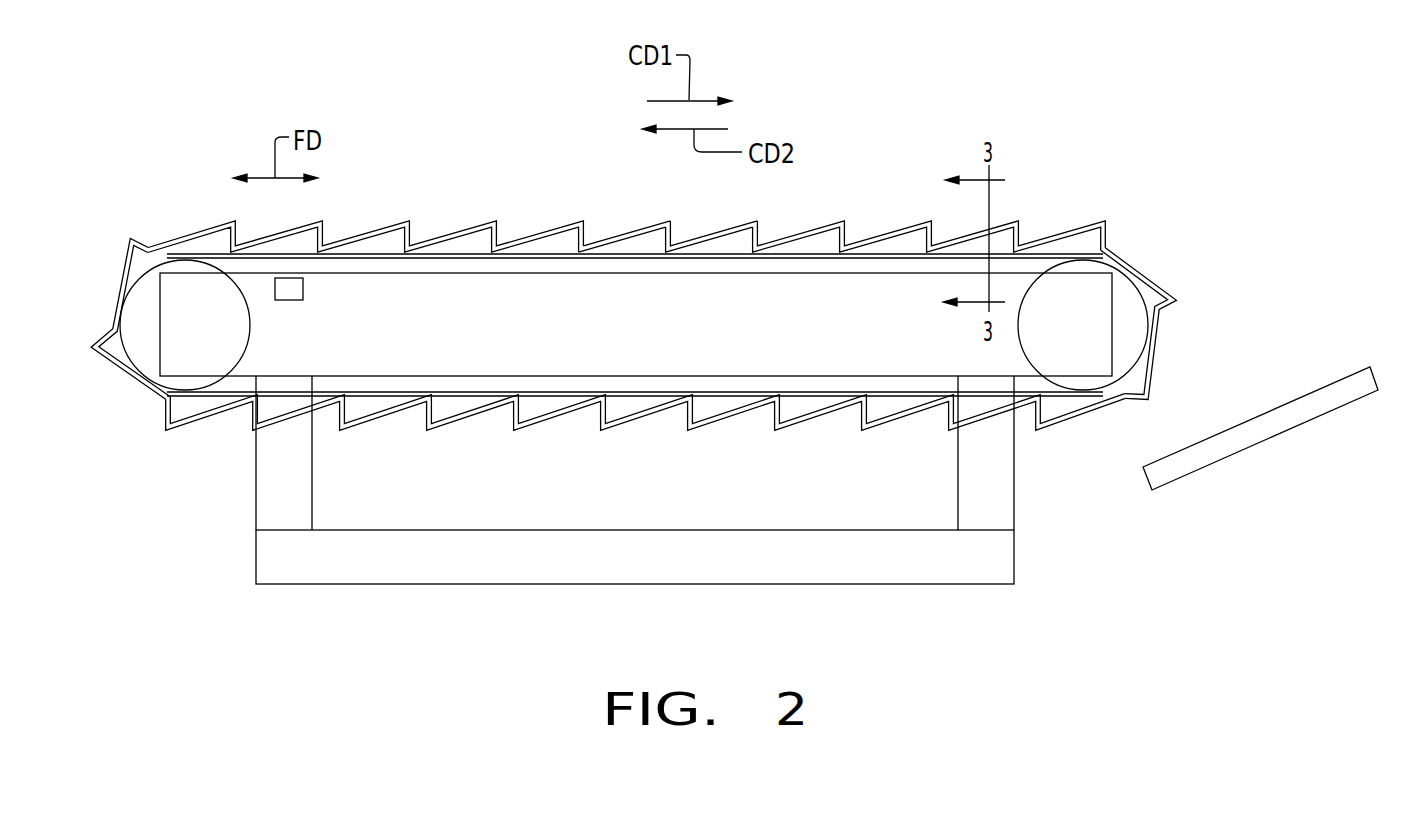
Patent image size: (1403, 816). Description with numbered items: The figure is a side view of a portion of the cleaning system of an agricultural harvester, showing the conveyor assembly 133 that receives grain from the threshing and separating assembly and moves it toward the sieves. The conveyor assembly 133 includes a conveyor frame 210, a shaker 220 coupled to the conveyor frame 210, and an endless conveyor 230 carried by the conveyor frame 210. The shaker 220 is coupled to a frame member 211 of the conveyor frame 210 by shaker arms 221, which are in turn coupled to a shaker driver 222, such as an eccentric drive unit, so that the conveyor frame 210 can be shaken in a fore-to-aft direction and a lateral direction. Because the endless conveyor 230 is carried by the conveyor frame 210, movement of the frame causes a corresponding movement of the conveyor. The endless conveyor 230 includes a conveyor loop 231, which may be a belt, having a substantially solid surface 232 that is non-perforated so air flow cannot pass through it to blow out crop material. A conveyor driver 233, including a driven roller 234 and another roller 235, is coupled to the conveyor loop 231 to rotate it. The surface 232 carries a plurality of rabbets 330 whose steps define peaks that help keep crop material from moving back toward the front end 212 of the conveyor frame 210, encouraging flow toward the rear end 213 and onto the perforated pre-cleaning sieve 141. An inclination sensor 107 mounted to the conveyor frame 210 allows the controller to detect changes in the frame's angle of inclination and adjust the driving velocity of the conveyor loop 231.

The conveyor assembly 133 is at (174, 131).
The endless conveyor 230 is at (583, 195).
The rabbets 330 is at (516, 226).
The conveyor loop 231 is at (594, 238).
The substantially solid surface 232 is at (678, 238).
The driven roller 234 is at (138, 275).
The roller 235 is at (1143, 290).
The conveyor frame 210 is at (671, 401).
The frame member 211 is at (428, 375).
The front end 212 is at (160, 342).
The rear end 213 is at (1111, 324).
The conveyor driver 233 is at (266, 336).
The inclination sensor 107 is at (305, 290).
The shaker 220 is at (681, 601).
The shaker arm 221 is at (263, 478).
The shaker driver 222 is at (527, 585).
The pre-cleaning sieve 141 is at (1267, 460).